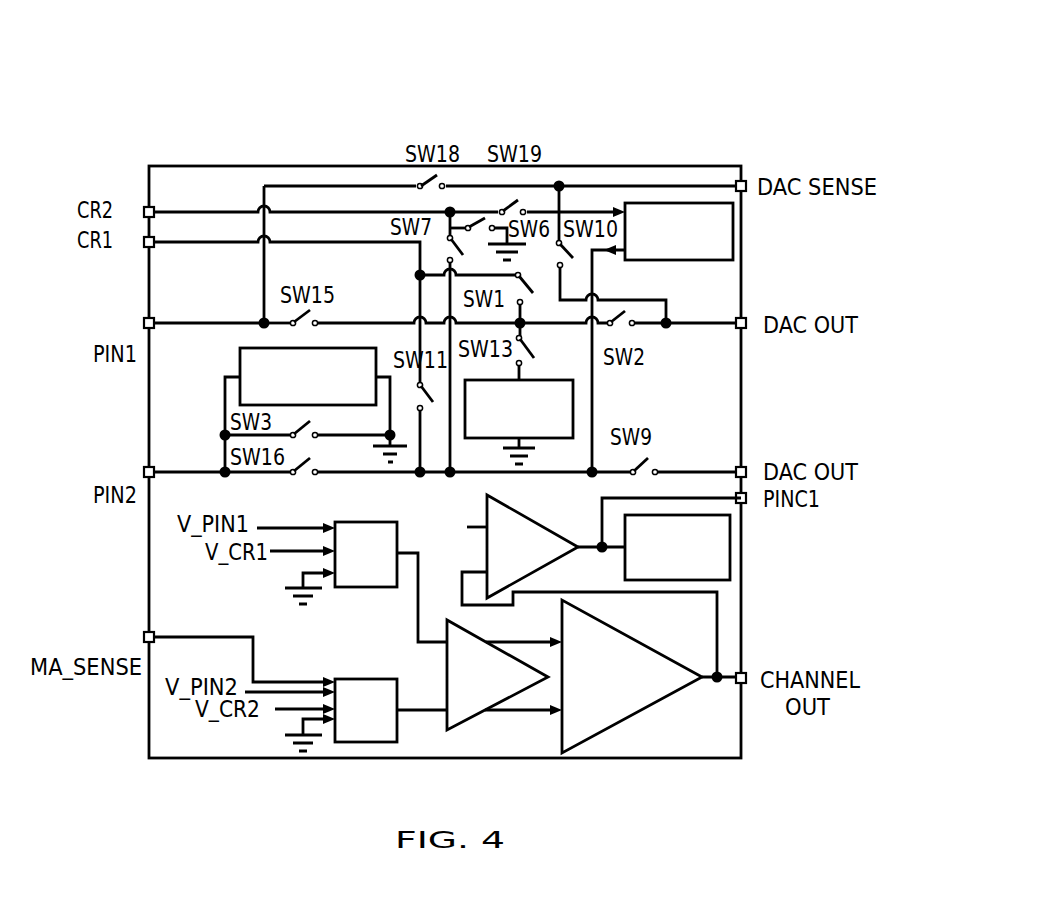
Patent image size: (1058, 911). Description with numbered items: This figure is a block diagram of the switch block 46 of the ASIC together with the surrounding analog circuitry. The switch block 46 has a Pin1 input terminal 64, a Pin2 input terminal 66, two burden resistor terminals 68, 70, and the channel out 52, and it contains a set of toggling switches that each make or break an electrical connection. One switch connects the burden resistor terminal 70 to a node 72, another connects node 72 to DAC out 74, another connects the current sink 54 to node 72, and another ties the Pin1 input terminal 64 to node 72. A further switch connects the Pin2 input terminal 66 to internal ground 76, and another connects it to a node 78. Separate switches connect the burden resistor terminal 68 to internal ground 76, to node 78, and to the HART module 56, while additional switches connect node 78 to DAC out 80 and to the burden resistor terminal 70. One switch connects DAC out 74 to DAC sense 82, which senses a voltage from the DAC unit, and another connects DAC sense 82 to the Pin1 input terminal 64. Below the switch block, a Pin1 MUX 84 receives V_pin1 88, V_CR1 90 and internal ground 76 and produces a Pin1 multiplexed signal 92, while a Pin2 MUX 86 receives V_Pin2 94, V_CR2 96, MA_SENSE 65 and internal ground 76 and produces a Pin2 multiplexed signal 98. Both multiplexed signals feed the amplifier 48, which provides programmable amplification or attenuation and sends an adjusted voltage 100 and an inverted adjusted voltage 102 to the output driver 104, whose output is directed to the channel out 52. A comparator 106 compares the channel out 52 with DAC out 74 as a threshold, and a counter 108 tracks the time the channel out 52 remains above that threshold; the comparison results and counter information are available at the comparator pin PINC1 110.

The switch block 46 is at (622, 74).
The amplifier 48 is at (460, 732).
The channel out 52 is at (746, 681).
The current sink 54 is at (543, 439).
The HART module 56 is at (678, 261).
The Pin1 input terminal 64 is at (144, 323).
The MA_SENSE 65 is at (144, 637).
The Pin2 input terminal 66 is at (144, 472).
The burden resistor terminal 68 is at (144, 212).
The burden resistor terminal 70 is at (144, 242).
The node 72 is at (527, 336).
The DAC out 74 is at (745, 326).
The internal ground 76 is at (513, 250).
The node 78 is at (447, 470).
The DAC out 80 is at (745, 470).
The DAC sense 82 is at (748, 181).
The Pin1 MUX 84 is at (380, 578).
The Pin2 MUX 86 is at (380, 737).
The V_pin1 88 is at (287, 527).
The V_CR1 90 is at (288, 552).
The Pin1 multiplexed signal 92 is at (417, 598).
The V_Pin2 94 is at (265, 690).
The V_CR2 96 is at (283, 711).
The Pin2 multiplexed signal 98 is at (421, 700).
The adjusted voltage 100 is at (508, 642).
The inverted adjusted voltage 102 is at (533, 712).
The output driver 104 is at (633, 718).
The comparator 106 is at (535, 518).
The counter 108 is at (697, 573).
The PINC1 110 is at (240, 362).